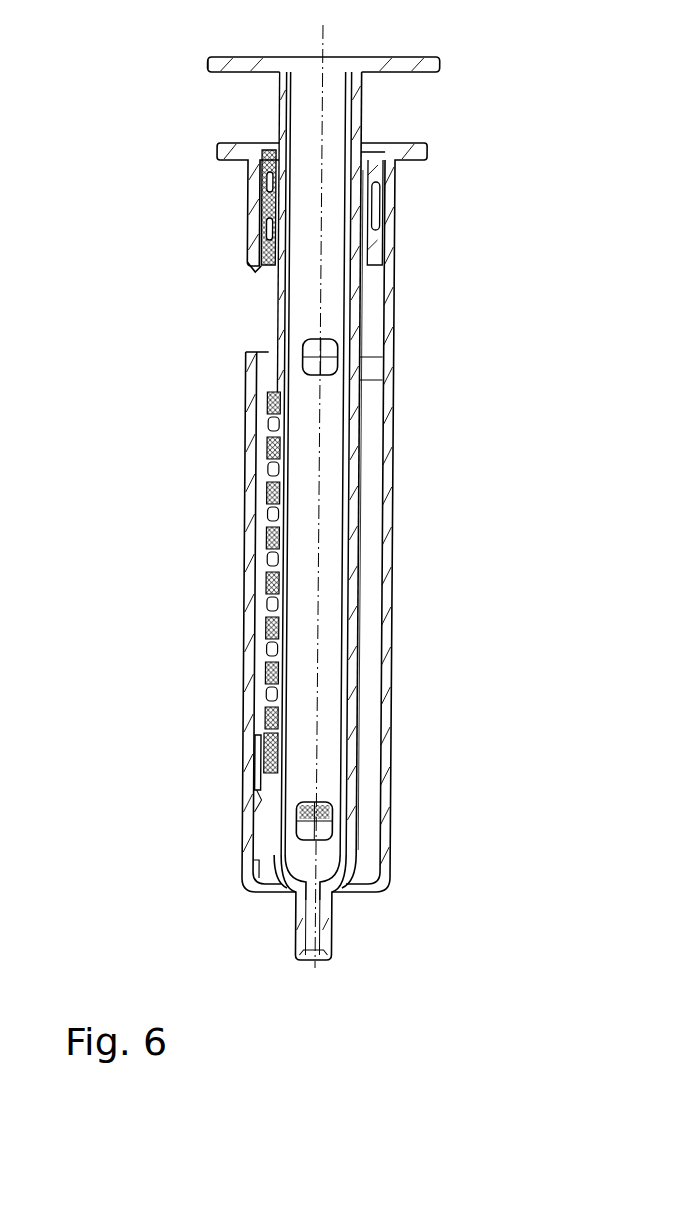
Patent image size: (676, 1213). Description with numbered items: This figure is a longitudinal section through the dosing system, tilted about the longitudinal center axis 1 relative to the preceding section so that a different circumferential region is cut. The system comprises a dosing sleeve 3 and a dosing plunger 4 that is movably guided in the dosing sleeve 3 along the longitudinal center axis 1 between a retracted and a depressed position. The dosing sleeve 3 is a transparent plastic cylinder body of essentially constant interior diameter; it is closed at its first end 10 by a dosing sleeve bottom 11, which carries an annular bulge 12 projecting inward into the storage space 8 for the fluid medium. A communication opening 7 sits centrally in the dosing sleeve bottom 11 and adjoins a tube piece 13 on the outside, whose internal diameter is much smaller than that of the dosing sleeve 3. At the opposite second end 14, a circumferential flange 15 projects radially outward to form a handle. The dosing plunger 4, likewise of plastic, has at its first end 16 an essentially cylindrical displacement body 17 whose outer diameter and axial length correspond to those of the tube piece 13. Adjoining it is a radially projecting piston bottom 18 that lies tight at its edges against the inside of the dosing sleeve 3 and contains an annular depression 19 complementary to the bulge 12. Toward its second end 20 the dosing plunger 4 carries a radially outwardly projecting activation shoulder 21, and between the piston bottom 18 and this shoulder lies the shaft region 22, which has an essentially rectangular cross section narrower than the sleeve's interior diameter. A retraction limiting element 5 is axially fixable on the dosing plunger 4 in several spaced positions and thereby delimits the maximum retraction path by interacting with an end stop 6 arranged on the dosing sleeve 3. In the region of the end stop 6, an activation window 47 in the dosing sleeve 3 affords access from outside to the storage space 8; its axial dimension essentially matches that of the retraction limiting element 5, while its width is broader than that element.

The longitudinal center axis 1 is at (325, 122).
The dosing sleeve 3 is at (396, 486).
The dosing plunger 4 is at (364, 590).
The retraction limiting element 5 is at (244, 797).
The end stop 6 is at (257, 258).
The communication opening 7 is at (337, 887).
The storage space 8 is at (385, 658).
The first end 10 is at (243, 898).
The dosing sleeve bottom 11 is at (393, 883).
The annular bulge 12 is at (278, 888).
The tube piece 13 is at (333, 942).
The second end 14 is at (248, 163).
The circumferential flange 15 is at (425, 150).
The first end 16 is at (300, 953).
The displacement body 17 is at (333, 908).
The piston bottom 18 is at (248, 868).
The annular depression 19 is at (250, 889).
The second end 20 is at (272, 81).
The activation shoulder 21 is at (207, 63).
The shaft region 22 is at (360, 323).
The activation window 47 is at (272, 318).